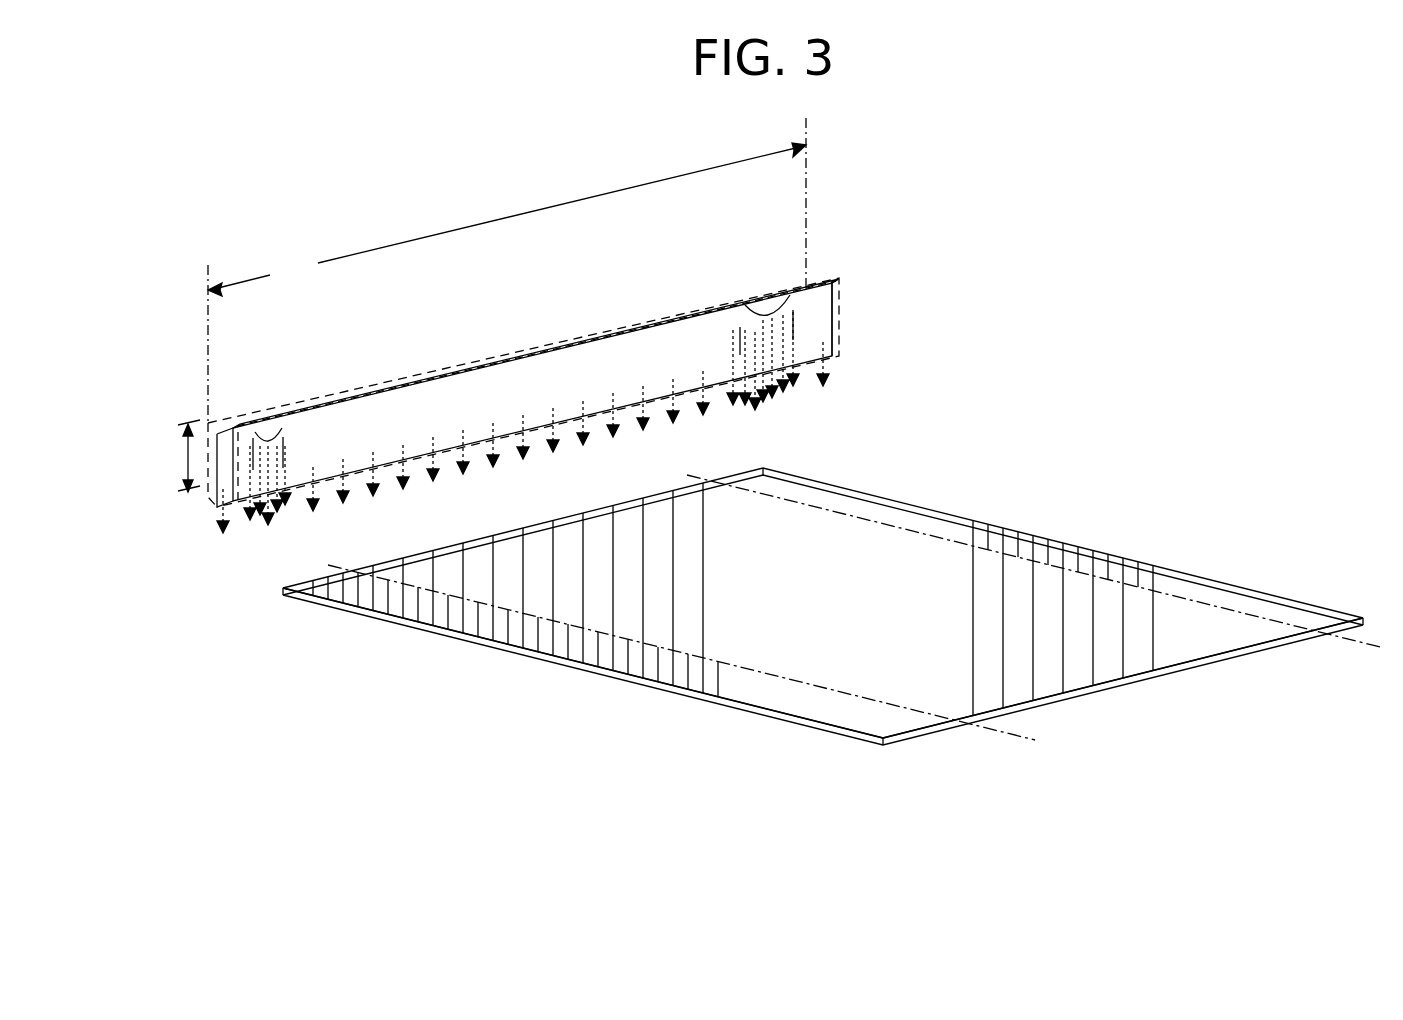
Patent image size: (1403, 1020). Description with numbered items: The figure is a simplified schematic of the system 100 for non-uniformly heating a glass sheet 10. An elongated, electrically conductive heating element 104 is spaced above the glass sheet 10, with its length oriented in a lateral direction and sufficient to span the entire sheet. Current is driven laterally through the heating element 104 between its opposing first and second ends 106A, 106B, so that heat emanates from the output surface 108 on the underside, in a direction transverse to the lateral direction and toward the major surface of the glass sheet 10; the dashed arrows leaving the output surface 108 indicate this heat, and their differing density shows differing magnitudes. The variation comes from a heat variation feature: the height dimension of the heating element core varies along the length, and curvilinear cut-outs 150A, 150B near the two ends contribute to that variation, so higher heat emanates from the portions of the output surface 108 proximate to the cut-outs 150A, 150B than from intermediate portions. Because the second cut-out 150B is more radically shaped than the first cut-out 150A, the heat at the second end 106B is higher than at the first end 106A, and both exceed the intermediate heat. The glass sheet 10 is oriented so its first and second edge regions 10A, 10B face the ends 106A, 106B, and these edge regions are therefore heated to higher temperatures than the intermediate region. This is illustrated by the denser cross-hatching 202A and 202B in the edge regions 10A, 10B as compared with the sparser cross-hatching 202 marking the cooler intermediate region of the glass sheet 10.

The system 100 is at (965, 264).
The heating element 104 is at (507, 334).
The first end 106A is at (181, 404).
The second end 106B is at (856, 316).
The first curvilinear cut-out 150A is at (268, 436).
The second curvilinear cut-out 150B is at (765, 320).
The output surface 108 is at (812, 368).
The glass sheet 10 is at (838, 540).
The first edge region 10A is at (808, 698).
The second edge region 10B is at (1208, 598).
The cross-hatching 202 is at (660, 598).
The cross-hatching 202A is at (632, 660).
The cross-hatching 202B is at (985, 548).